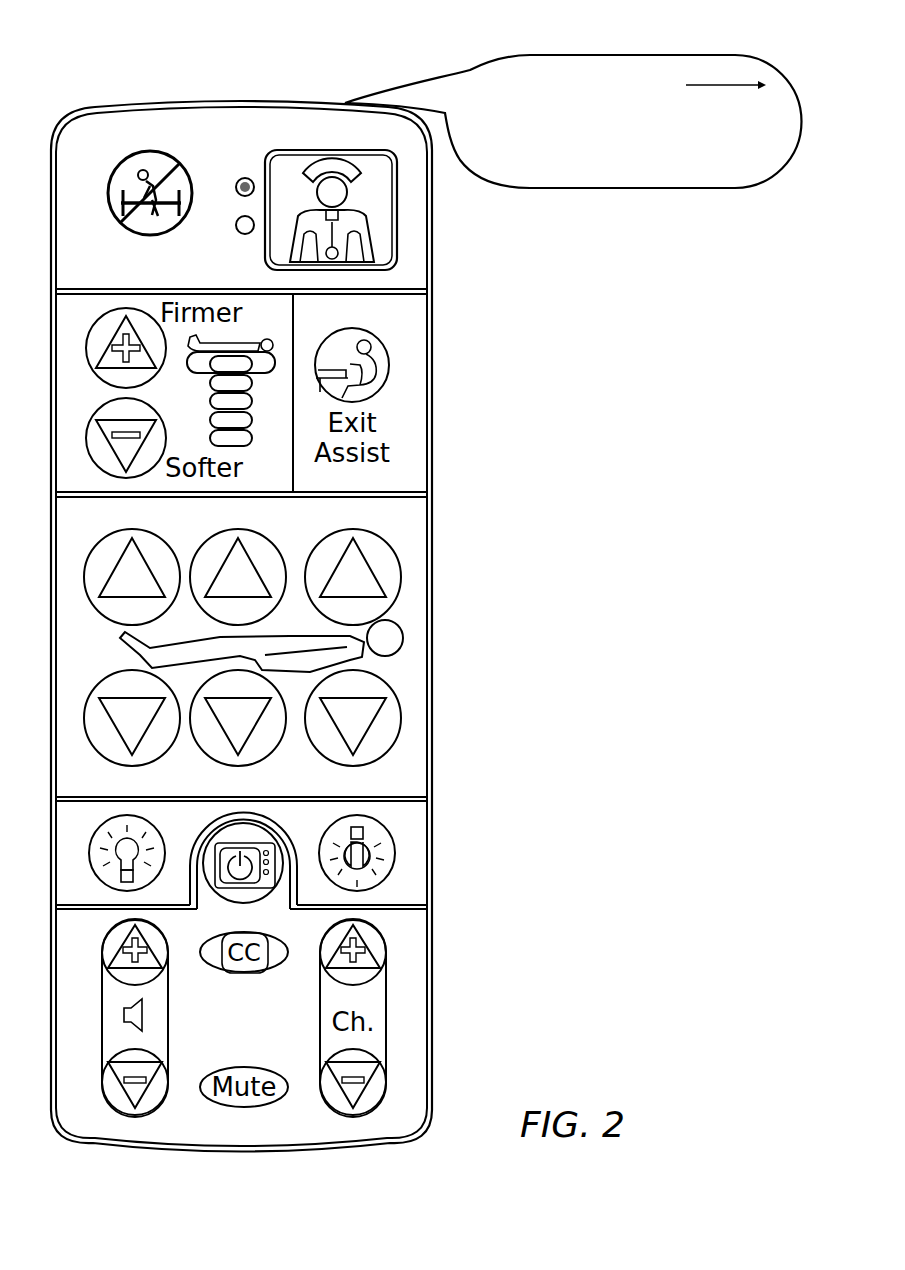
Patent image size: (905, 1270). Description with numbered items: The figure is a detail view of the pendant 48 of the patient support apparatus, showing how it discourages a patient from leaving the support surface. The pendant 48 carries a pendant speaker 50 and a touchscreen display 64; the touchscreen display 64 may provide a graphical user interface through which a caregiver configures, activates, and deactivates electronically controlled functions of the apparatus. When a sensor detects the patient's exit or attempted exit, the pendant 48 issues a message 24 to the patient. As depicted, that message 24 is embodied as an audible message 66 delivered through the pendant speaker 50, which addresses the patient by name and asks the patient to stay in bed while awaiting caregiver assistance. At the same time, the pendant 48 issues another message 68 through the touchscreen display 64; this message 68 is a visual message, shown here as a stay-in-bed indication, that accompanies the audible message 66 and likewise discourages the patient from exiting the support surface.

The pendant 48 is at (251, 90).
The touchscreen display 64 is at (87, 155).
The message 68 is at (158, 170).
The pendant speaker 50 is at (350, 122).
The audible message 66 is at (582, 44).
The message 24 is at (607, 5).